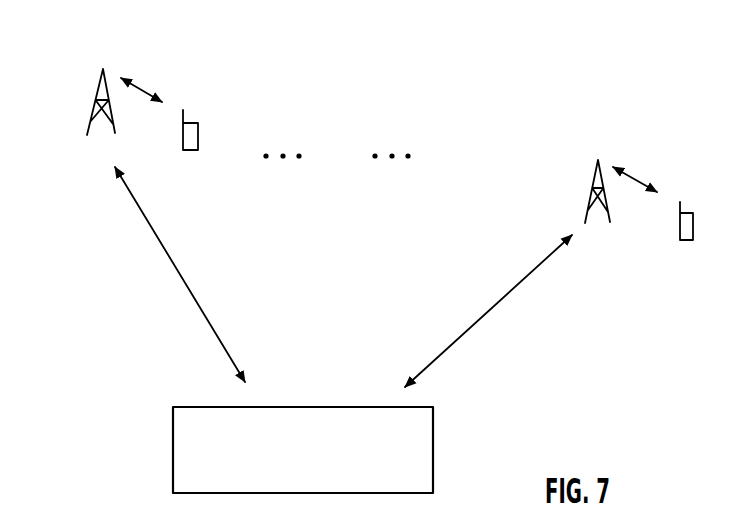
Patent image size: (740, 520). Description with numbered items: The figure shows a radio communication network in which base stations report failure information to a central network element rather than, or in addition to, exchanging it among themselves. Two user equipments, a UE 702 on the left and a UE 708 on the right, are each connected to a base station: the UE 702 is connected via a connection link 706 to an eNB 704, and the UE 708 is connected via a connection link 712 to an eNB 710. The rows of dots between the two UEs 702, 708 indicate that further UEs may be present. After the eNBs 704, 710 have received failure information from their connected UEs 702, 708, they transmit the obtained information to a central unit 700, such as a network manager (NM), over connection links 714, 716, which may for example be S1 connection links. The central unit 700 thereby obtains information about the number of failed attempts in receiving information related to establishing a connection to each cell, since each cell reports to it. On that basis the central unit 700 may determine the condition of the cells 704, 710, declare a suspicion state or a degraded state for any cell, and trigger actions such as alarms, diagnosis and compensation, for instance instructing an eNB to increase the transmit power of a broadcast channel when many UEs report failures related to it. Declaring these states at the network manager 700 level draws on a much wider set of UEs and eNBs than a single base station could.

The central unit 700 is at (413, 484).
The UE 702 is at (187, 150).
The eNB 704 is at (91, 121).
The connection link 706 is at (140, 85).
The UE 708 is at (685, 240).
The eNB 710 is at (588, 210).
The connection link 712 is at (637, 178).
The connection link 714 is at (175, 260).
The connection link 716 is at (482, 318).